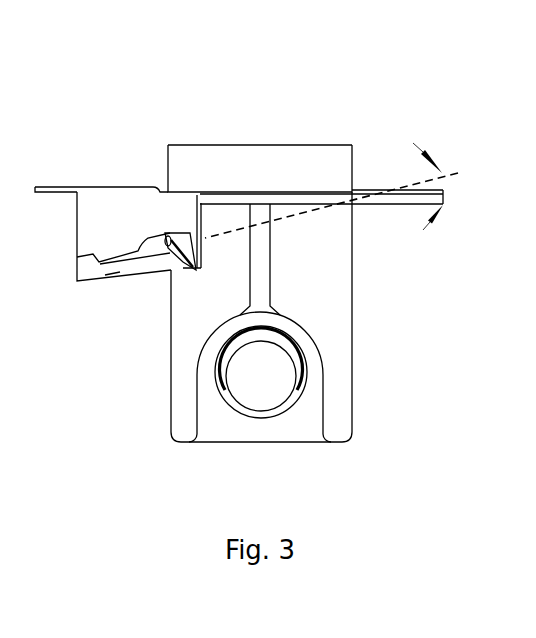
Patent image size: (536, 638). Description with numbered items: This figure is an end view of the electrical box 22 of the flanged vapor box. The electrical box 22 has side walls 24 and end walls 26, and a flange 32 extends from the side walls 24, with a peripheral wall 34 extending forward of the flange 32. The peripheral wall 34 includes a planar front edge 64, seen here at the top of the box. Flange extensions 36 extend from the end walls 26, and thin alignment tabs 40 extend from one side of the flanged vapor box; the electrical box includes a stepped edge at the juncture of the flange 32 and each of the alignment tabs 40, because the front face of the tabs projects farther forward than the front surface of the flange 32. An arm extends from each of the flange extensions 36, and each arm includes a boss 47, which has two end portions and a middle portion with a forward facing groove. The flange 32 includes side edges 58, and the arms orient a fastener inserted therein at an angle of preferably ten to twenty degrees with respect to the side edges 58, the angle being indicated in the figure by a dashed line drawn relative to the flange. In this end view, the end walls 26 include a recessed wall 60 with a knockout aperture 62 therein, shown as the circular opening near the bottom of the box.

The electrical box 22 is at (116, 117).
The side walls 24 is at (352, 324).
The end walls 26 is at (296, 273).
The flange 32 is at (311, 193).
The peripheral wall 34 is at (249, 179).
The flange extensions 36 is at (119, 229).
The alignment tabs 40 is at (45, 187).
The boss 47 is at (112, 272).
The side edges 58 is at (443, 193).
The recessed wall 60 is at (224, 432).
The knockout aperture 62 is at (249, 388).
The planar front edge 64 is at (242, 145).